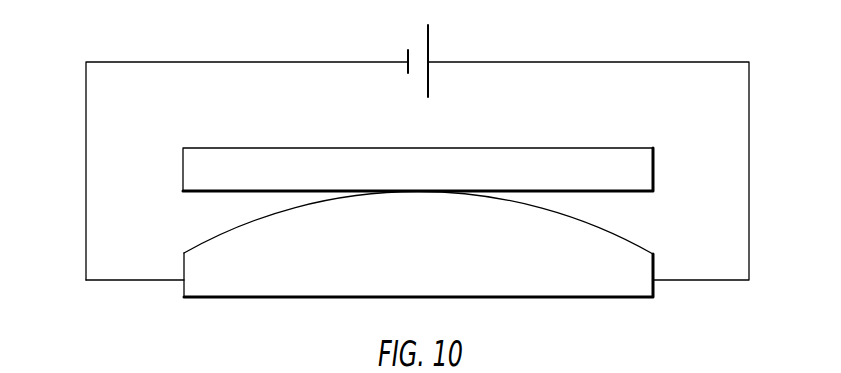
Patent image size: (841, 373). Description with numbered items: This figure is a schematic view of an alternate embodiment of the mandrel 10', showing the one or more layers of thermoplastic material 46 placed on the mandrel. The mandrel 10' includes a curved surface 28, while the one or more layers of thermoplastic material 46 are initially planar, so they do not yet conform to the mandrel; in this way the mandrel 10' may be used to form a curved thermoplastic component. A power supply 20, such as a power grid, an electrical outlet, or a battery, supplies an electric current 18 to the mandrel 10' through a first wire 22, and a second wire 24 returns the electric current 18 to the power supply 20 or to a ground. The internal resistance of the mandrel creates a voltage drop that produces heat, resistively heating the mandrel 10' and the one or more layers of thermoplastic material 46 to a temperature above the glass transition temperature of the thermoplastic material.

The mandrel 10' is at (422, 295).
The electric current 18 is at (257, 48).
The power supply 20 is at (410, 89).
The first wire 22 is at (563, 63).
The second wire 24 is at (86, 103).
The curved surface 28 is at (208, 238).
The one or more layers of thermoplastic material 46 is at (445, 159).